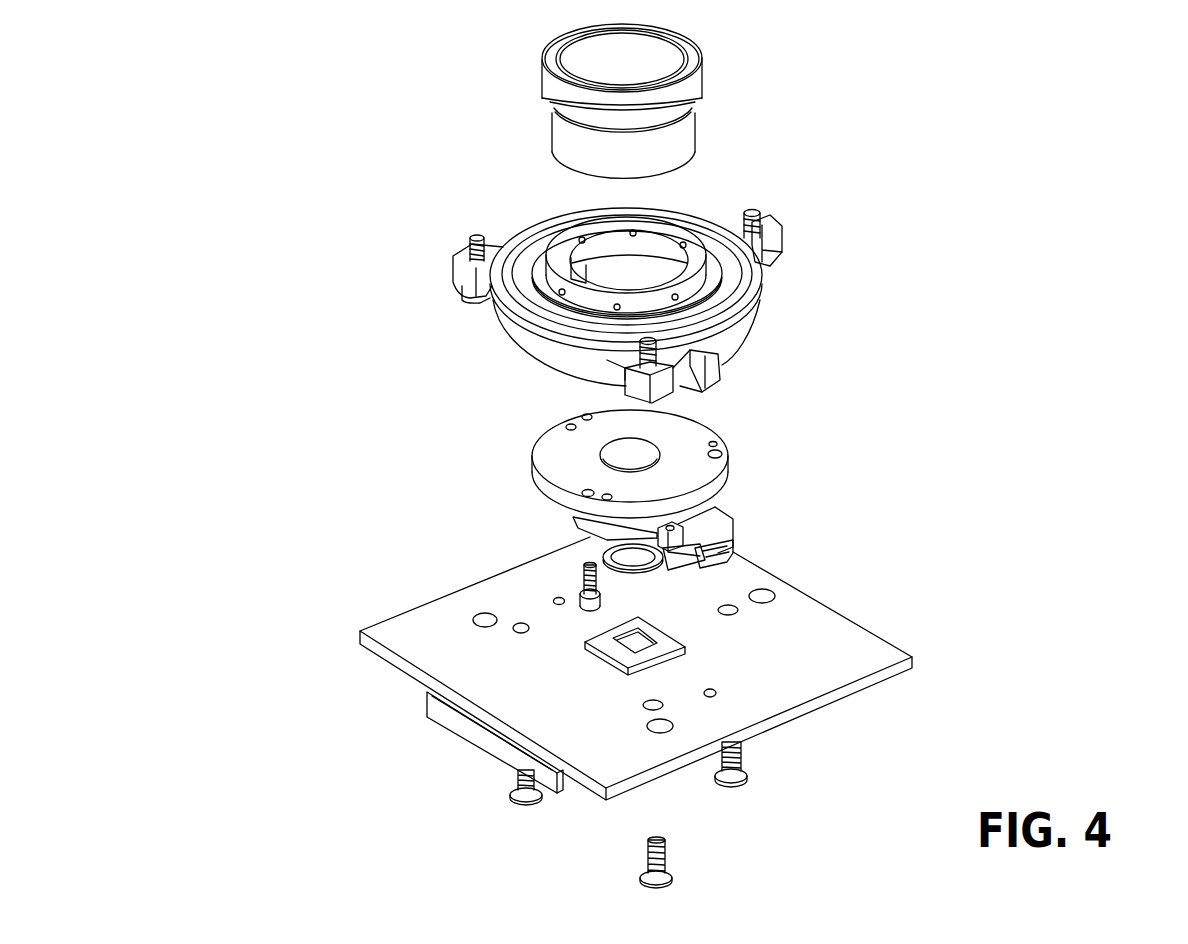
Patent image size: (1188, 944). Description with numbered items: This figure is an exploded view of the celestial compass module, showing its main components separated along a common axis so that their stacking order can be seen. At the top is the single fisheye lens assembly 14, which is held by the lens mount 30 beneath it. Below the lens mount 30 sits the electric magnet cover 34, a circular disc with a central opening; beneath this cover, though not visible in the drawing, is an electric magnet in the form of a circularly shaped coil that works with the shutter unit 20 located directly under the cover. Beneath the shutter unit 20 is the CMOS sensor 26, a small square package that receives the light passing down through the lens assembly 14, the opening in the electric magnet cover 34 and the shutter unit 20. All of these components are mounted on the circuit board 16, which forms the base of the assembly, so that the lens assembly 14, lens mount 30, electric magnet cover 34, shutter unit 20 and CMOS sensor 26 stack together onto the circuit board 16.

The lens assembly 14 is at (725, 100).
The lens mount 30 is at (777, 287).
The electric magnet cover 34 is at (848, 464).
The shutter unit 20 is at (777, 518).
The circuit board 16 is at (378, 678).
The CMOS sensor 26 is at (580, 654).